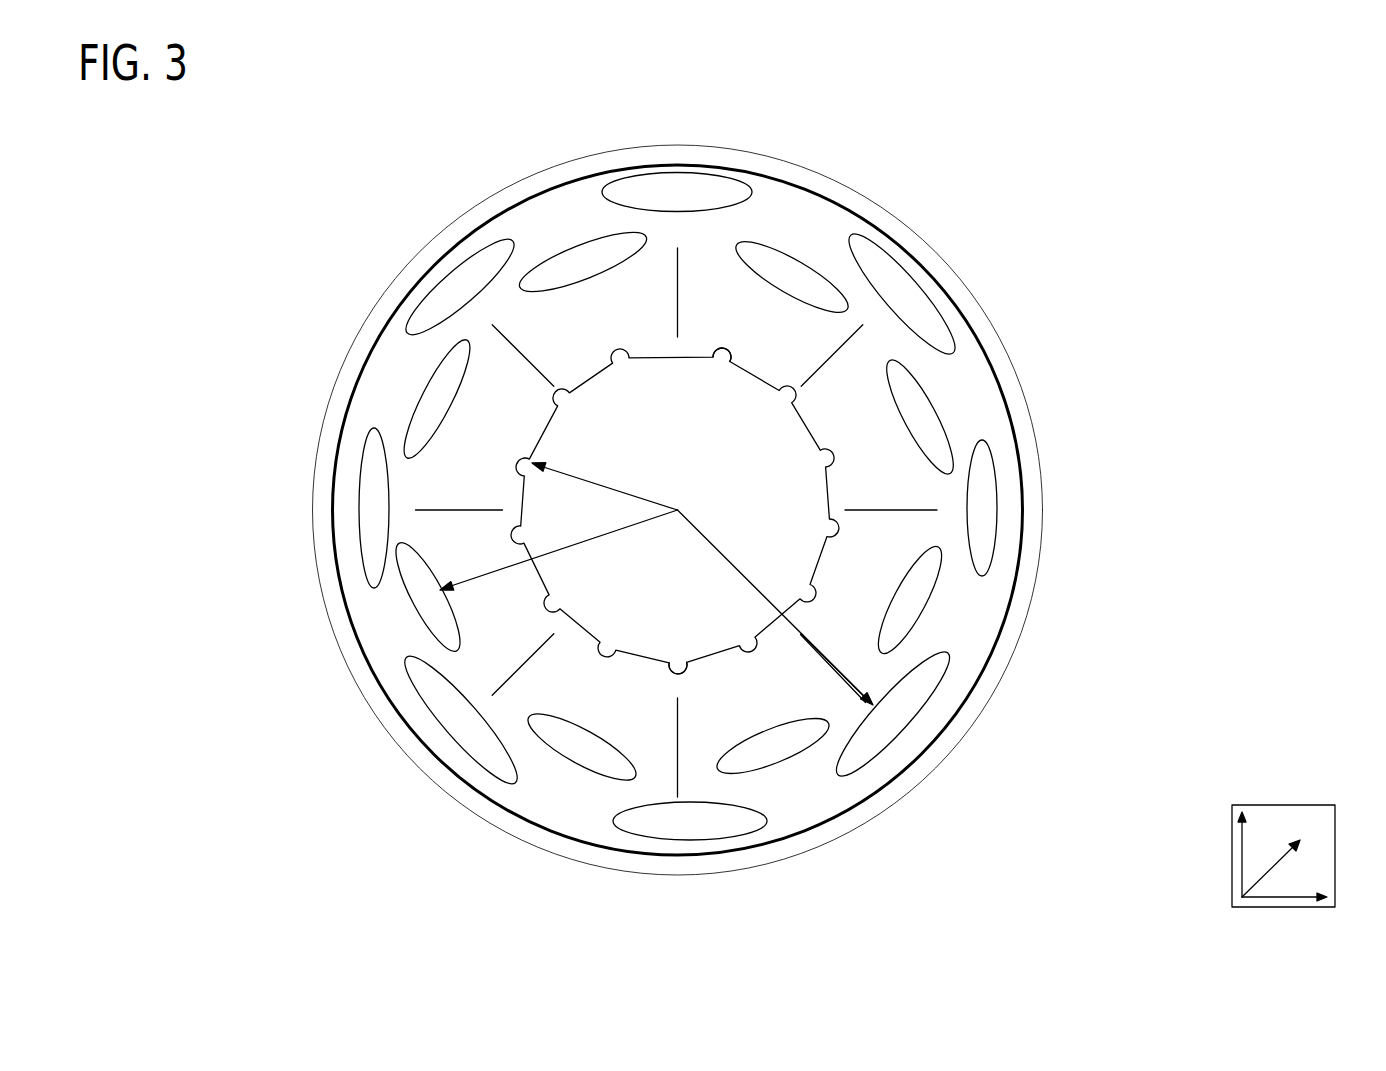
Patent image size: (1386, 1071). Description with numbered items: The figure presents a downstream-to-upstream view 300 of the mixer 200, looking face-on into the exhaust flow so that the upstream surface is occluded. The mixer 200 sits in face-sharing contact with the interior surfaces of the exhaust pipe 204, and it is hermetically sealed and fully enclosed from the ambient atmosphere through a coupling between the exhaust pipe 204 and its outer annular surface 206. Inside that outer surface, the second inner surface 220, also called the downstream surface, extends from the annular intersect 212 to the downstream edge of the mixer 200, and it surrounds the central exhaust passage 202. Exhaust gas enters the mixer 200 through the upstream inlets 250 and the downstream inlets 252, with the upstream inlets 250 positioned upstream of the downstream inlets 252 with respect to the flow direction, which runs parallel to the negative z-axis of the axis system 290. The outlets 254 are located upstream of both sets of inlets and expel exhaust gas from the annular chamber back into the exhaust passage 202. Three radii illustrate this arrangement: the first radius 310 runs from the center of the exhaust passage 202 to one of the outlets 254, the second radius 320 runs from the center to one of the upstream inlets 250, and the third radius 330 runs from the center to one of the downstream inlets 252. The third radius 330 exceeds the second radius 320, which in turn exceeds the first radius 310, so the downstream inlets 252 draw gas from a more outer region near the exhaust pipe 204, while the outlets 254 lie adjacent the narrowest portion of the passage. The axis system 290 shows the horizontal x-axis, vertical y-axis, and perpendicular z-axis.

The downstream-to-upstream view 300 is at (300, 125).
The mixer 200 is at (1055, 183).
The exhaust pipe 204 is at (820, 177).
The outer annular surface 206 is at (992, 350).
The second inner surface 220 is at (662, 322).
The downstream inlets 252 is at (525, 245).
The upstream inlets 250 is at (468, 405).
The exhaust passage 202 is at (729, 462).
The annular intersect 212 is at (681, 357).
The outlets 254 is at (678, 640).
The first radius 310 is at (597, 483).
The second radius 320 is at (550, 553).
The third radius 330 is at (708, 540).
The axis system 290 is at (1336, 825).